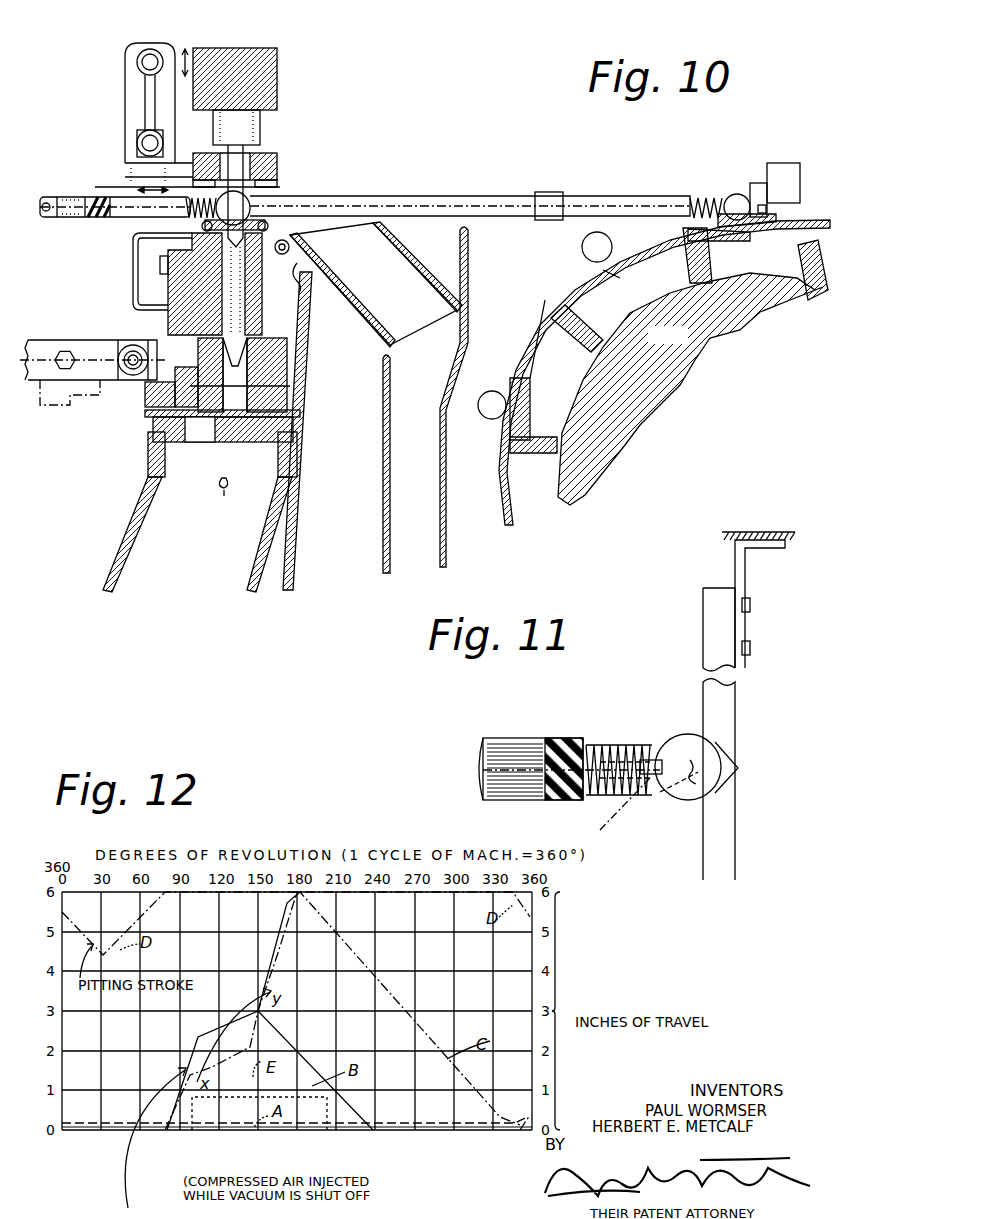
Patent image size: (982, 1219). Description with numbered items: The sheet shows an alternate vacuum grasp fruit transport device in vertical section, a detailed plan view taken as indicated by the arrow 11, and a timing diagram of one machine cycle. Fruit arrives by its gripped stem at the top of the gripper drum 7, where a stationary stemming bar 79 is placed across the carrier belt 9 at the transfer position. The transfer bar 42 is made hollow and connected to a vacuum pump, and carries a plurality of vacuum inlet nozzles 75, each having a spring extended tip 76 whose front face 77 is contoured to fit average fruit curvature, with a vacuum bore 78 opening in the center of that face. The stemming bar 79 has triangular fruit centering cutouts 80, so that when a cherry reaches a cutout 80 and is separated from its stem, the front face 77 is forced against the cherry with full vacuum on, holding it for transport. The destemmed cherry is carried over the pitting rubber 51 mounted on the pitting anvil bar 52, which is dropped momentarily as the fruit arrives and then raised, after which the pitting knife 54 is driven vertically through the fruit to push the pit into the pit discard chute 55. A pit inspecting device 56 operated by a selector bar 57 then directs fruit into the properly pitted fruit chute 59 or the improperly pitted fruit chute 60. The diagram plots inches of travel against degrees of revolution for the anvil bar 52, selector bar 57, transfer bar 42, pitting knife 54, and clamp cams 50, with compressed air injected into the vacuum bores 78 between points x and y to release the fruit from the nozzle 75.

In FIG. 10, the gripper drum 7 is at (669, 366).
In FIG. 10, the carrier belt 9 is at (590, 263).
In FIG. 10, the arrow 11 is at (742, 145).
In FIG. 12, the transfer bar 42 is at (372, 970).
In FIG. 12, the clamp cams 50 is at (334, 1121).
In FIG. 10, the pitting rubber 51 is at (250, 216).
In FIG. 10, the pitting anvil bar 52 is at (180, 297).
In FIG. 12, the pitting anvil bar 52 is at (210, 1130).
In FIG. 10, the pitting knife 54 is at (245, 150).
In FIG. 12, the pitting knife 54 is at (282, 902).
In FIG. 10, the pit discard chute 55 is at (197, 534).
In FIG. 10, the pit inspecting device 56 is at (145, 439).
In FIG. 10, the selector bar 57 is at (50, 379).
In FIG. 12, the selector bar 57 is at (332, 1045).
In FIG. 10, the properly pitted fruit chute 59 is at (356, 464).
In FIG. 10, the improperly pitted fruit chute 60 is at (430, 397).
In FIG. 10, the vacuum inlet nozzle 75 is at (56, 198).
In FIG. 11, the vacuum inlet nozzle 75 is at (496, 793).
In FIG. 10, the spring extended tip 76 is at (700, 197).
In FIG. 11, the spring extended tip 76 is at (630, 745).
In FIG. 10, the front face 77 is at (741, 194).
In FIG. 11, the front face 77 is at (696, 742).
In FIG. 11, the vacuum bore 78 is at (583, 745).
In FIG. 10, the stemming bar 79 is at (763, 185).
In FIG. 11, the stemming bar 79 is at (714, 697).
In FIG. 11, the fruit centering cutout 80 is at (705, 801).